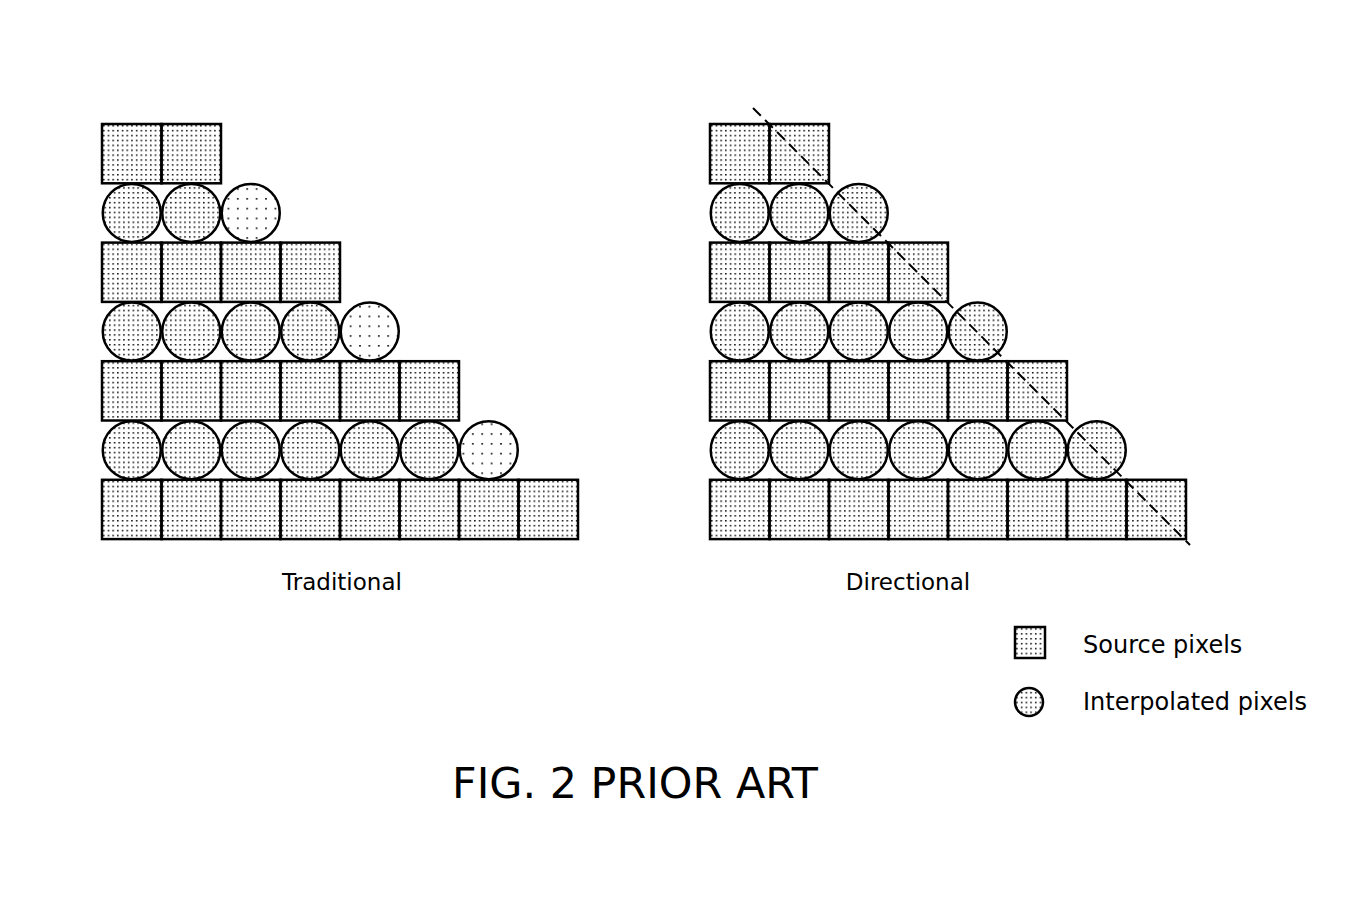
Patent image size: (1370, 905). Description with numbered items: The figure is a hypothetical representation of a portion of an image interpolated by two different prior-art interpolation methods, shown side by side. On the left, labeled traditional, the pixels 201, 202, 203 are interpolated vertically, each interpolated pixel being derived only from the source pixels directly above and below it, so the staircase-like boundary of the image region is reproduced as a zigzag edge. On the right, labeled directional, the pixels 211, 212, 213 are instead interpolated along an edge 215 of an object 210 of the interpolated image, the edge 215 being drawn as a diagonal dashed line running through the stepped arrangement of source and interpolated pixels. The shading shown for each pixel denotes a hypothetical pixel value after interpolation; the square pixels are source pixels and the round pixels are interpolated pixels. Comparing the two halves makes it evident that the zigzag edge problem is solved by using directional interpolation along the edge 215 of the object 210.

The pixel 201 is at (265, 208).
The pixel 202 is at (376, 325).
The pixel 203 is at (494, 443).
The object 210 is at (693, 139).
The pixel 211 is at (880, 207).
The pixel 212 is at (984, 326).
The pixel 213 is at (1110, 441).
The edge 215 is at (1195, 549).